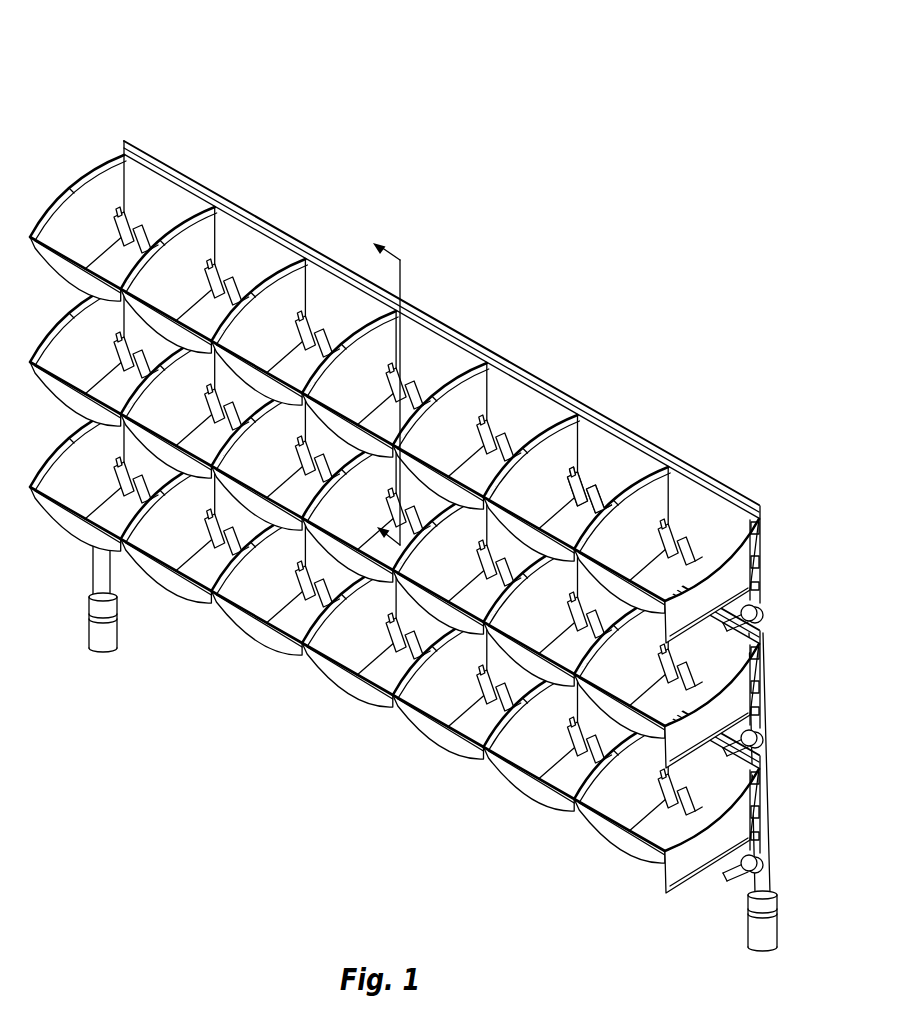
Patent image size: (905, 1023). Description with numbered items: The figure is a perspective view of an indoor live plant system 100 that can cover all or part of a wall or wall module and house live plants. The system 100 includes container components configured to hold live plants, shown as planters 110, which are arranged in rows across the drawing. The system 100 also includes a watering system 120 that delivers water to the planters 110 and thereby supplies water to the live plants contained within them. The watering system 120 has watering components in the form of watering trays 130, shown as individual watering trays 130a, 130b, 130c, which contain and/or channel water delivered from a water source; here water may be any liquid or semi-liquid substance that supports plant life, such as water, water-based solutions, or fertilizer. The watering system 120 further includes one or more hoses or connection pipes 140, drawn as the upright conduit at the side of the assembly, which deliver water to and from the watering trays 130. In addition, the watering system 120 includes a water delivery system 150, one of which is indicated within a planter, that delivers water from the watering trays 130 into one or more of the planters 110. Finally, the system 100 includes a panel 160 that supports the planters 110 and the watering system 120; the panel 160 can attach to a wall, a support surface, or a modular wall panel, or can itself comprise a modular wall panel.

The indoor live plant system 100 is at (95, 113).
The planters 110 is at (203, 597).
The watering system 120 is at (805, 696).
The watering trays 130 is at (659, 893).
The watering tray 130a is at (740, 624).
The watering tray 130b is at (722, 755).
The watering tray 130c is at (722, 887).
The hoses or connection pipes 140 is at (800, 833).
The water delivery system 150 is at (580, 488).
The panel 160 is at (763, 538).